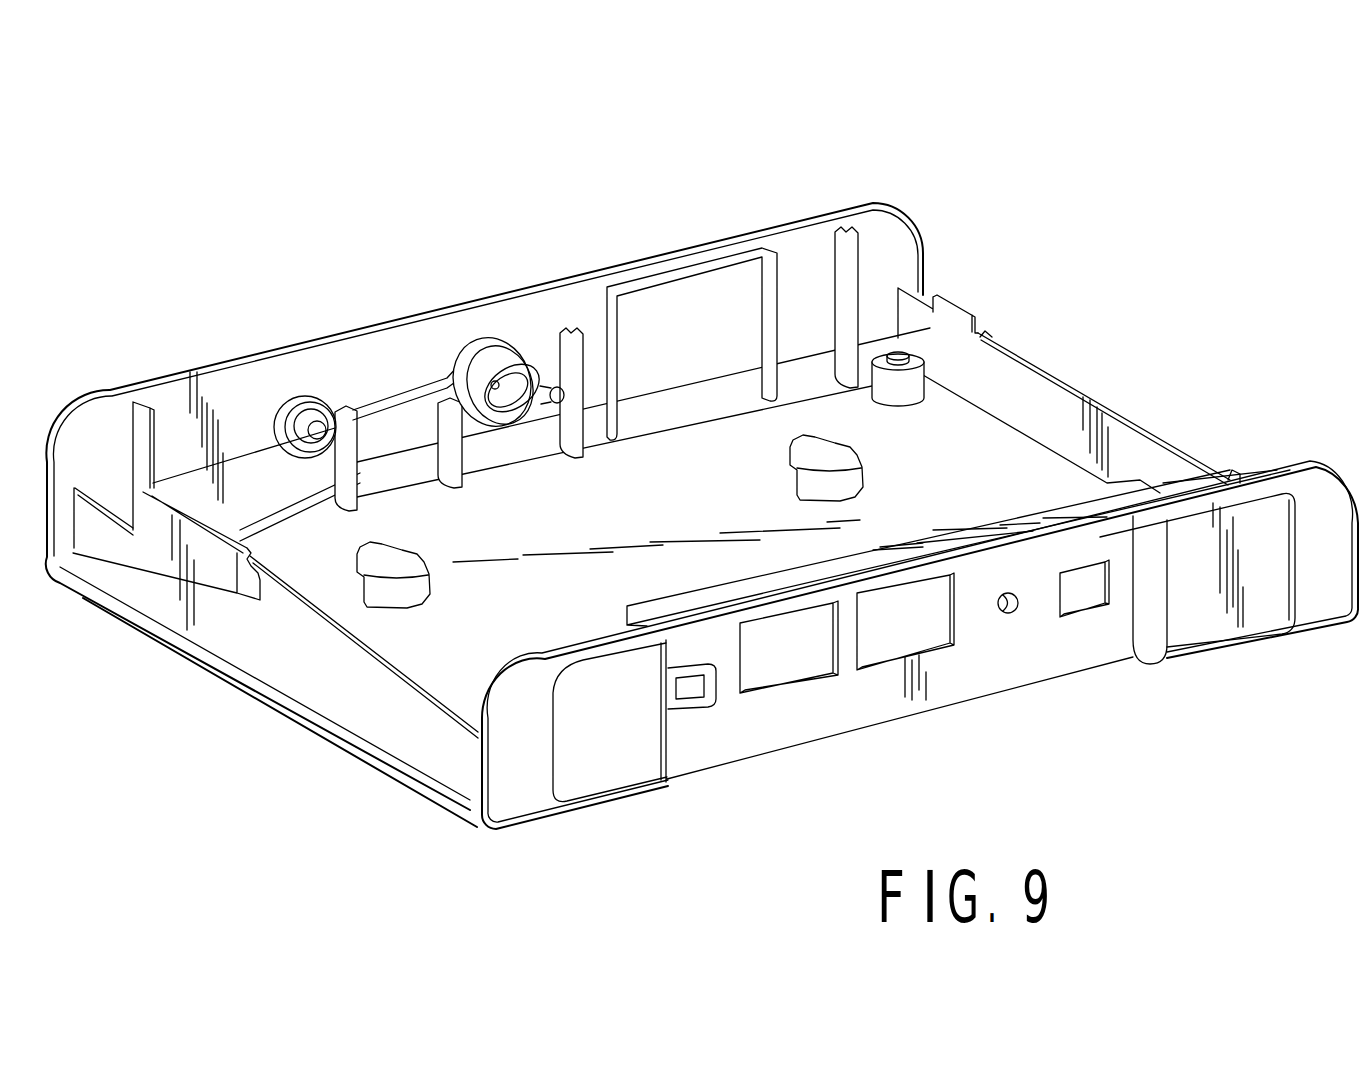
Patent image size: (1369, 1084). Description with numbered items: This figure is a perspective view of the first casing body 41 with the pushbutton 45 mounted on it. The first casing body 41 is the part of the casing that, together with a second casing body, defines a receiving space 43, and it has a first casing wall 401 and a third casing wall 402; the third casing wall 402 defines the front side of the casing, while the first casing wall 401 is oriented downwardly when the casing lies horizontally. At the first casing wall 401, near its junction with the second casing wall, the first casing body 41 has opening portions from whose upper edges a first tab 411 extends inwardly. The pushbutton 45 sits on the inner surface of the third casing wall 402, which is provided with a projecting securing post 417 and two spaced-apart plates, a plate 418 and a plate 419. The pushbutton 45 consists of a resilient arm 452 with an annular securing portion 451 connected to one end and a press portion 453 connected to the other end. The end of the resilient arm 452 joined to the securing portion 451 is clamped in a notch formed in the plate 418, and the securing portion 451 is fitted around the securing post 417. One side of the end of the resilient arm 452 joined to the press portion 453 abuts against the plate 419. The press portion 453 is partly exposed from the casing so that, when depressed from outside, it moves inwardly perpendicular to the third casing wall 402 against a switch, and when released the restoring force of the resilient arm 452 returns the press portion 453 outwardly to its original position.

The first casing body 41 is at (640, 258).
The receiving space 43 is at (413, 648).
The pushbutton 45 is at (335, 407).
The first casing wall 401 is at (997, 458).
The third casing wall 402 is at (802, 260).
The first tab 411 is at (955, 313).
The securing post 417 is at (297, 433).
The plate 418 is at (347, 412).
The plate 419 is at (448, 420).
The securing portion 451 is at (302, 413).
The resilient arm 452 is at (425, 403).
The press portion 453 is at (485, 343).